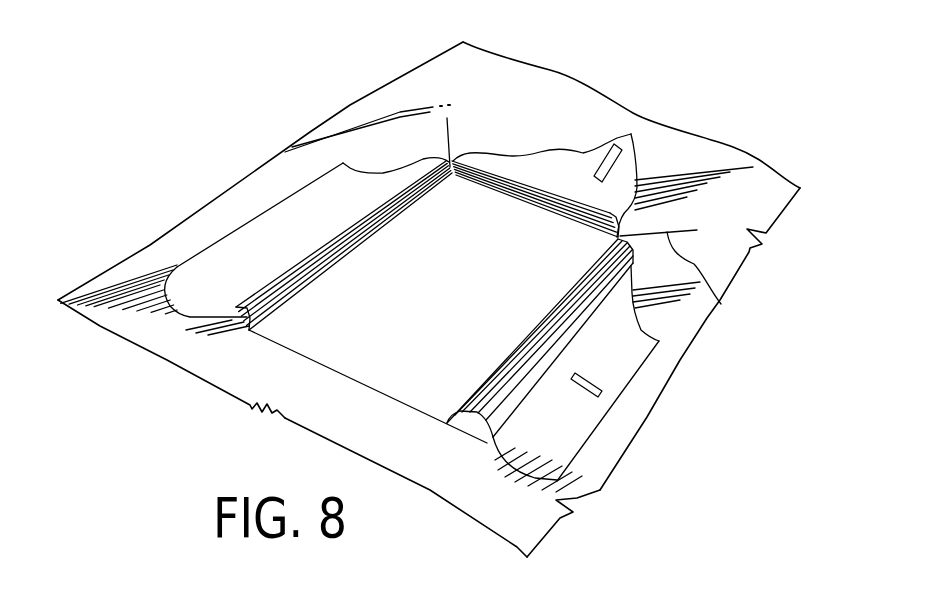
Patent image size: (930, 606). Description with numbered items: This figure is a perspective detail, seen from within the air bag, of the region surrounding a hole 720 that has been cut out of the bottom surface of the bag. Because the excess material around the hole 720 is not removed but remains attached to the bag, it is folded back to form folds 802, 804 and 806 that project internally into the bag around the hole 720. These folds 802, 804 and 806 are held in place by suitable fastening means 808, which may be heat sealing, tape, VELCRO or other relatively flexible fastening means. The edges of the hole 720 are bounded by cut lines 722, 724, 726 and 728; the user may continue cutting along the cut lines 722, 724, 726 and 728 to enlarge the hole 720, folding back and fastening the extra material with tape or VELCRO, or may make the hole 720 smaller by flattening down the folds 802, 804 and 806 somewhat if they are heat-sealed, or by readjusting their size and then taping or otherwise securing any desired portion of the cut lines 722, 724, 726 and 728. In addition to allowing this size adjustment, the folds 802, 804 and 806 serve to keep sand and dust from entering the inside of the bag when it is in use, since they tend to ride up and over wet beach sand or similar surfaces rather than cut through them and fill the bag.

The hole 720 is at (465, 300).
The cut line 722 is at (451, 125).
The cut line 724 is at (720, 298).
The cut line 726 is at (478, 437).
The cut line 728 is at (246, 325).
The fold 802 is at (297, 218).
The fold 804 is at (600, 155).
The fold 806 is at (607, 378).
The fastening means 808 is at (634, 166).